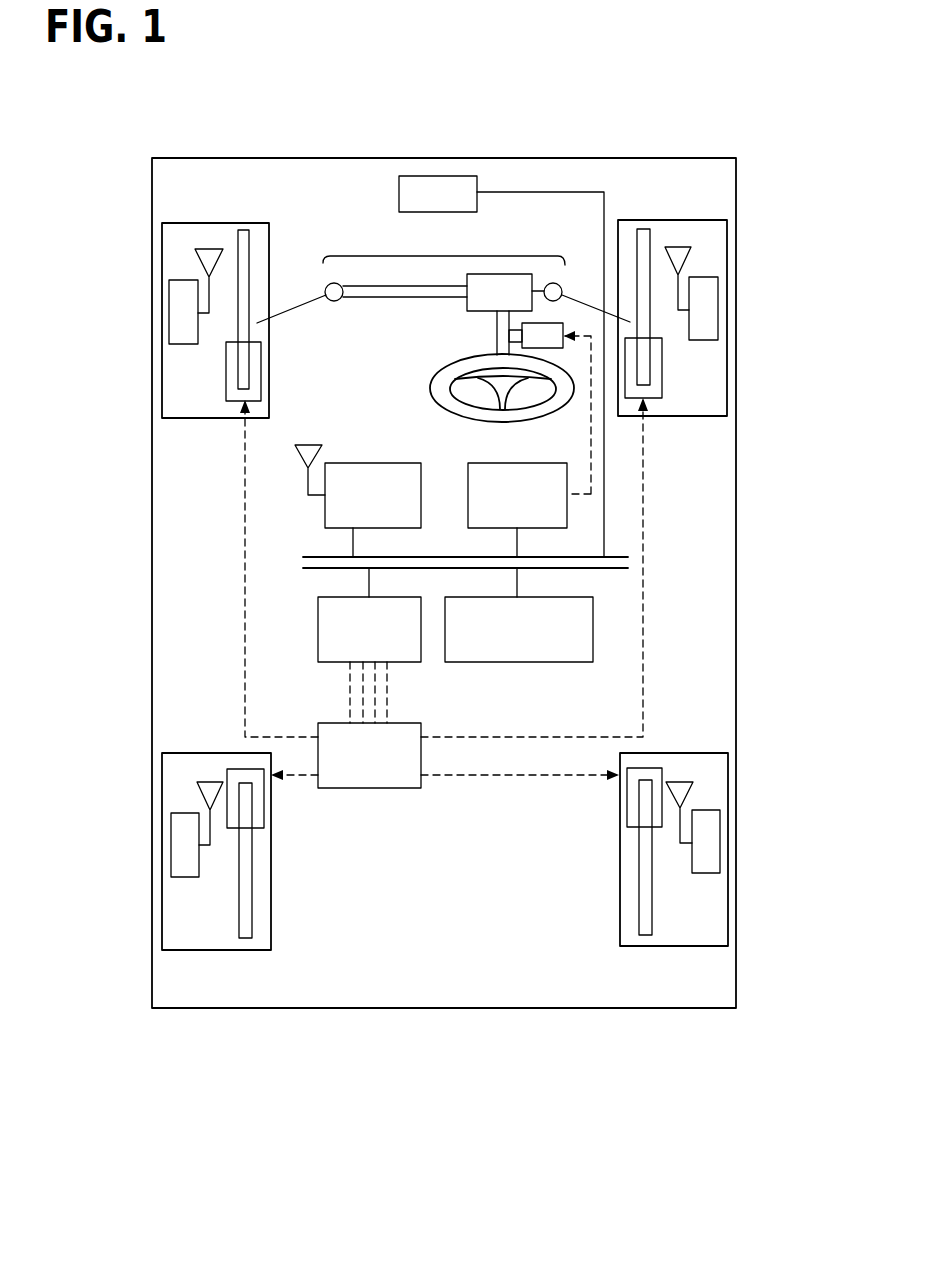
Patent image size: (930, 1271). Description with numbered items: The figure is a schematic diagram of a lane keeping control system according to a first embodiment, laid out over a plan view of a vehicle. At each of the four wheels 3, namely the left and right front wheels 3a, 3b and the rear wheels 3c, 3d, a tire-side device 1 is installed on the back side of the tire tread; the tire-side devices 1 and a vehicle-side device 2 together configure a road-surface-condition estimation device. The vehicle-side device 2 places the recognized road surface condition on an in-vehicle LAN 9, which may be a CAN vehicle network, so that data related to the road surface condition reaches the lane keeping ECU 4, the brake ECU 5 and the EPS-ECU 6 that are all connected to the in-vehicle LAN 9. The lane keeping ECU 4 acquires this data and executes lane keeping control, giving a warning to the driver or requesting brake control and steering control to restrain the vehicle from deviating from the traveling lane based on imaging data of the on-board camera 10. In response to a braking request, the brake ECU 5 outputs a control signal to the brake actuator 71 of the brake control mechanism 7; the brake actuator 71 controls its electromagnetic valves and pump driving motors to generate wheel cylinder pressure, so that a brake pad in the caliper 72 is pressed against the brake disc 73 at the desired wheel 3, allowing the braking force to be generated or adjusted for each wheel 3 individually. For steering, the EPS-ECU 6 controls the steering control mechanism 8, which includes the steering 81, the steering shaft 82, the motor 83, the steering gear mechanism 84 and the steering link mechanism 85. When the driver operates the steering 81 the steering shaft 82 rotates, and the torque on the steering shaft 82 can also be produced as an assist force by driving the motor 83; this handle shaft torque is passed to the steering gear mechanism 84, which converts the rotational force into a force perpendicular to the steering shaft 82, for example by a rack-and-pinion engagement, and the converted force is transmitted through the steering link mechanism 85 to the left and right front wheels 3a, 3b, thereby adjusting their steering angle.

The tire-side device 1 is at (169, 297).
The vehicle-side device 2 is at (325, 518).
The wheel 3 is at (440, 561).
The left front wheel 3a is at (182, 223).
The right front wheel 3b is at (700, 220).
The wheel 3c is at (193, 753).
The wheel 3d is at (700, 753).
The lane keeping ECU 4 is at (593, 627).
The brake ECU 5 is at (318, 635).
The EPS-ECU 6 is at (567, 513).
The brake control mechanism 7 is at (438, 756).
The brake actuator 71 is at (362, 788).
The caliper 72 is at (226, 375).
The brake disc 73 is at (238, 328).
The steering control mechanism 8 is at (374, 290).
The steering 81 is at (430, 395).
The steering shaft 82 is at (497, 338).
The motor 83 is at (562, 323).
The steering gear mechanism 84 is at (537, 278).
The steering link mechanism 85 is at (447, 256).
The in-vehicle LAN 9 is at (588, 557).
The on-board camera 10 is at (458, 176).